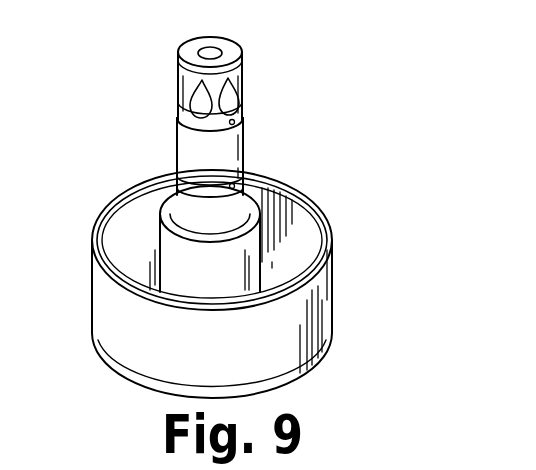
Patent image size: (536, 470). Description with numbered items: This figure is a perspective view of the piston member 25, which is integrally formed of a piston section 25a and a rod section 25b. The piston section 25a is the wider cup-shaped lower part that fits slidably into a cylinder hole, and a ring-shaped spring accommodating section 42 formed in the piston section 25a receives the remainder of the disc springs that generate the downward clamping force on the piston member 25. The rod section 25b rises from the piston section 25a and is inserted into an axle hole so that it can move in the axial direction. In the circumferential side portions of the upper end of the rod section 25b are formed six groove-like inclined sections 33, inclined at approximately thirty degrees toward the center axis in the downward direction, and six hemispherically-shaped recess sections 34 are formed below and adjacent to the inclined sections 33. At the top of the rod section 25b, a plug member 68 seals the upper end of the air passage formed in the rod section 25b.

The piston member 25 is at (407, 163).
The piston section 25a is at (317, 298).
The rod section 25b is at (233, 143).
The inclined sections 33 is at (241, 80).
The recess sections 34 is at (233, 110).
The spring accommodating section 42 is at (122, 243).
The plug member 68 is at (210, 54).